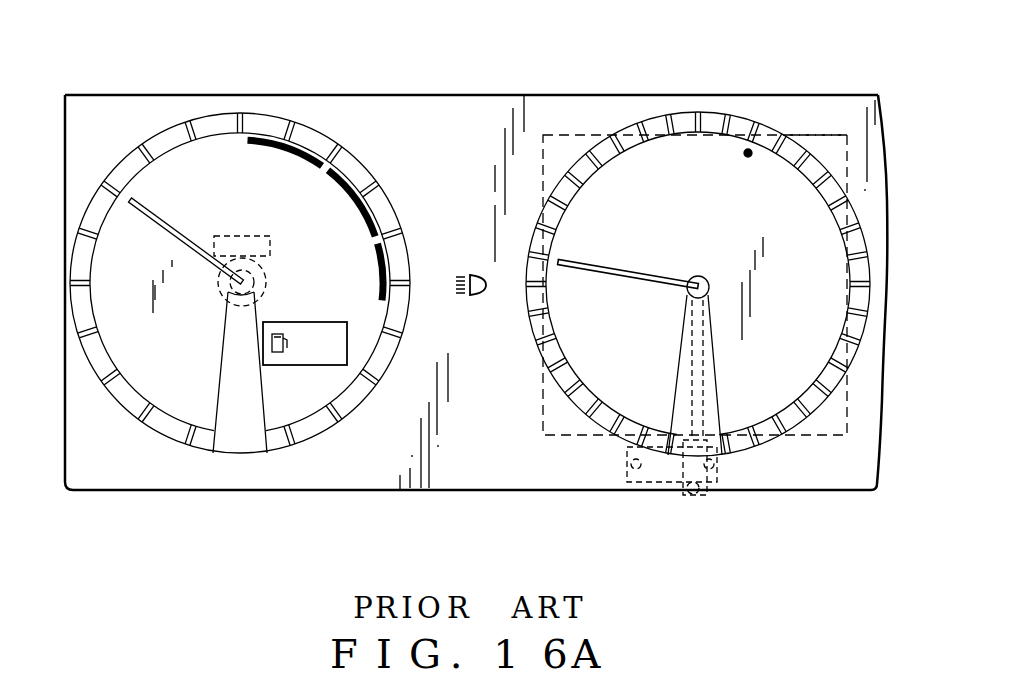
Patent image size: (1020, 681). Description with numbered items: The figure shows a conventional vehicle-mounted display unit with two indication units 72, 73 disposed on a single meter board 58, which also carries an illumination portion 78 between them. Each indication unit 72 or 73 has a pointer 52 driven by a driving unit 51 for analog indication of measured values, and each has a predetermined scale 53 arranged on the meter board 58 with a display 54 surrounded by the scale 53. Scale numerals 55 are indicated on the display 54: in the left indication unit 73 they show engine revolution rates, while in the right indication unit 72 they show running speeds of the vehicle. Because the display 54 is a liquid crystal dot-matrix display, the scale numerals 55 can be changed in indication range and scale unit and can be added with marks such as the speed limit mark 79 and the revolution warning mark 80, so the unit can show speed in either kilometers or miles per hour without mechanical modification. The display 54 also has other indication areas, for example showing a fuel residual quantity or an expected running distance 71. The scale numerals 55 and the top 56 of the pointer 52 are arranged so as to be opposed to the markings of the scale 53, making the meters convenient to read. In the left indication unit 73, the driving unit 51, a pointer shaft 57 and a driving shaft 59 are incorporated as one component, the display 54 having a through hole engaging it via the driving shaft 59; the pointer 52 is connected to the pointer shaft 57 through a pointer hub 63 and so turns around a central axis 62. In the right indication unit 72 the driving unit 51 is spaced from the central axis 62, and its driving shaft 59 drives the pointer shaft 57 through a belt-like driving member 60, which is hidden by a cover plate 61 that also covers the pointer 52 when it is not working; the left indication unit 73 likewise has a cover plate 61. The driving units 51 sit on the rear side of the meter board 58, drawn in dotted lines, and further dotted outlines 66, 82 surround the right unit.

The driving unit 51 is at (238, 262).
The pointer 52 is at (182, 226).
The scale 53 is at (93, 225).
The display 54 is at (313, 200).
The scale numerals 55 is at (128, 334).
The top of the pointer 56 is at (132, 196).
The pointer shaft 57 is at (226, 298).
The meter board 58 is at (420, 142).
The driving shaft 59 is at (218, 275).
The driving member 60 is at (717, 425).
The cover plate 61 is at (238, 397).
The central axis 62 is at (230, 297).
The pointer hub 63 is at (280, 270).
The circuit board 66 is at (805, 137).
The expected running distance 71 is at (297, 366).
The indication unit 72 is at (825, 458).
The indication unit 73 is at (107, 433).
The illumination portion 78 is at (473, 268).
The speed limit mark 79 is at (747, 148).
The revolution warning mark 80 is at (255, 142).
The speedometer module 82 is at (548, 135).